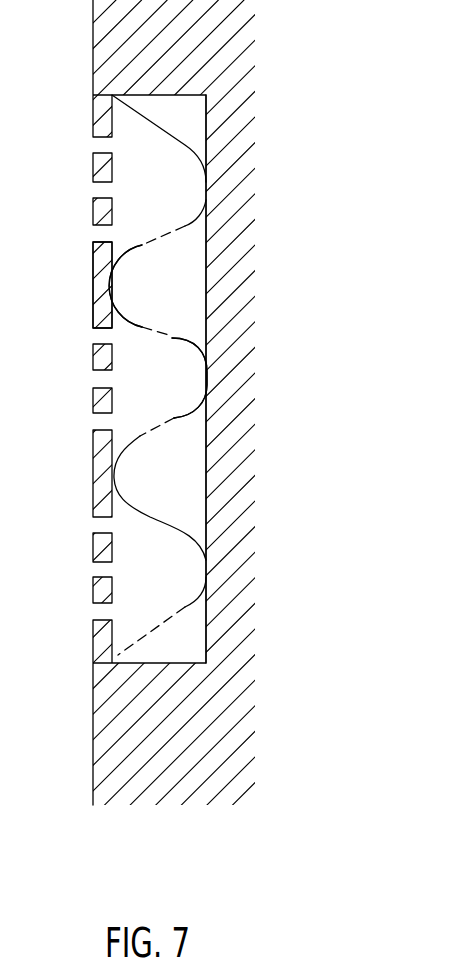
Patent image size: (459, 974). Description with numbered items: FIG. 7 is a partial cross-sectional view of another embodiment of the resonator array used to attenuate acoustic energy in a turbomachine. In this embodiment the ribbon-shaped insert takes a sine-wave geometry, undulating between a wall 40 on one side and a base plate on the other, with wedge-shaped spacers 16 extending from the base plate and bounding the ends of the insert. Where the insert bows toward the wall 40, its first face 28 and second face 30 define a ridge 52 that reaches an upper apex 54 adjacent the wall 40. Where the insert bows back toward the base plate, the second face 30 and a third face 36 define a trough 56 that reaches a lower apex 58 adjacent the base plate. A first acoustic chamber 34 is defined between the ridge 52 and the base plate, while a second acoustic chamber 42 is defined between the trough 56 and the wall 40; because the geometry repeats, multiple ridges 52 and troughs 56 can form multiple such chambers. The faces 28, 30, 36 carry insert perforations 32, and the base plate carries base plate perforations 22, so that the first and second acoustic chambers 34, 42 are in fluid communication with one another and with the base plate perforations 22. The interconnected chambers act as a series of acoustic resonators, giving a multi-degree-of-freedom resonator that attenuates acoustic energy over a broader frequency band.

The spacer 16 is at (190, 657).
The base plate perforations 22 is at (87, 423).
The first face 28 is at (206, 432).
The second face 30 is at (172, 336).
The insert perforations 32 is at (162, 428).
The first acoustic chamber 34 is at (170, 397).
The third face 36 is at (173, 232).
The wall 40 is at (206, 632).
The second acoustic chamber 42 is at (190, 297).
The ridge 52 is at (236, 382).
The upper apex 54 is at (206, 366).
The trough 56 is at (90, 295).
The lower apex 58 is at (111, 274).